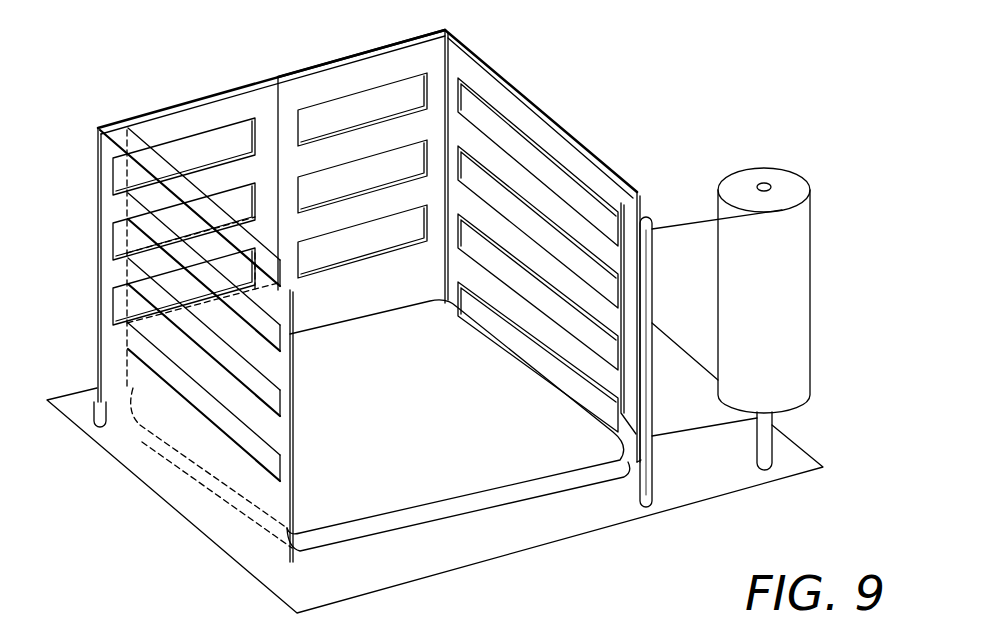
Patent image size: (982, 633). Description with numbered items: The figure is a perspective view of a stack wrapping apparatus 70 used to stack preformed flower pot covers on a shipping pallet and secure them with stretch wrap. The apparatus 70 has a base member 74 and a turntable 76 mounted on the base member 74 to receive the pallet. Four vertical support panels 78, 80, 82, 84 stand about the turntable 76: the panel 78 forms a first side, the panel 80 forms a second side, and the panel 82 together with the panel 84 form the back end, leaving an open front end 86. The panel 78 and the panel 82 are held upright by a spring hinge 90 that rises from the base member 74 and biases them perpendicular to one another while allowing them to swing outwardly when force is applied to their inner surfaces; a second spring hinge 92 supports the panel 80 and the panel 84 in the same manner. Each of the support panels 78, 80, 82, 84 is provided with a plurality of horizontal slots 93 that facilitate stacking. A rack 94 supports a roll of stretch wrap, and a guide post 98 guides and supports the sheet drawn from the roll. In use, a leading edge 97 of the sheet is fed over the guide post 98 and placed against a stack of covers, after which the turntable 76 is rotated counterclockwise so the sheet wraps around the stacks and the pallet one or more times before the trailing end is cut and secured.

The stack wrapping apparatus 70 is at (583, 79).
The base member 74 is at (231, 555).
The turntable 76 is at (527, 495).
The vertical support panel 78 is at (568, 133).
The vertical support panel 80 is at (186, 438).
The vertical support panel 82 is at (356, 57).
The vertical support panel 84 is at (140, 118).
The open front end 86 is at (398, 561).
The spring hinge 90 is at (448, 30).
The spring hinge 92 is at (97, 152).
The horizontal slots 93 is at (240, 127).
The rack 94 is at (768, 443).
The leading edge 97 is at (616, 400).
The guide post 98 is at (764, 186).